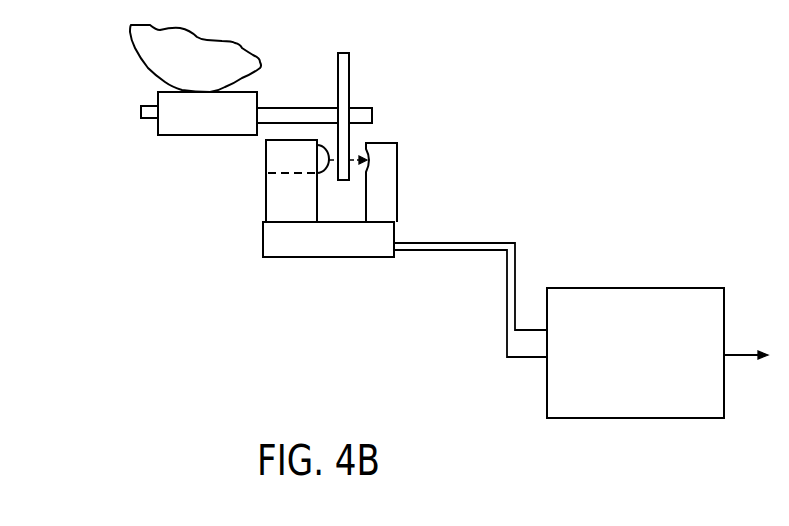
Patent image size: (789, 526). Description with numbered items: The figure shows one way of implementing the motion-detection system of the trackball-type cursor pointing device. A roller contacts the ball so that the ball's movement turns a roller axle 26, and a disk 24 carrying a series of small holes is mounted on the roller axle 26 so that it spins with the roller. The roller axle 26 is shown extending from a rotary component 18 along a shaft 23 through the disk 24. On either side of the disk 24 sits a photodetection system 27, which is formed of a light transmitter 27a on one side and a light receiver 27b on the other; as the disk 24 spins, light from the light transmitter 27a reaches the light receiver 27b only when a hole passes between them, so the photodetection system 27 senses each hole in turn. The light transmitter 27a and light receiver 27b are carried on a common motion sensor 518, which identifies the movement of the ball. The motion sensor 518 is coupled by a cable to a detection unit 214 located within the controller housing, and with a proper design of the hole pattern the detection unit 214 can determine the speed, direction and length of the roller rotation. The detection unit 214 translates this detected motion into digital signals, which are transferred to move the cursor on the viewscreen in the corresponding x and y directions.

The motor 18 is at (170, 108).
The drive shaft 23 is at (292, 84).
The disk 24 is at (346, 65).
The roller axle 26 is at (362, 117).
The photodetection system 27 is at (329, 253).
The light transmitter 27a is at (285, 158).
The light receiver 27b is at (380, 168).
The motion sensor 518 is at (320, 272).
The detection unit 214 is at (562, 377).